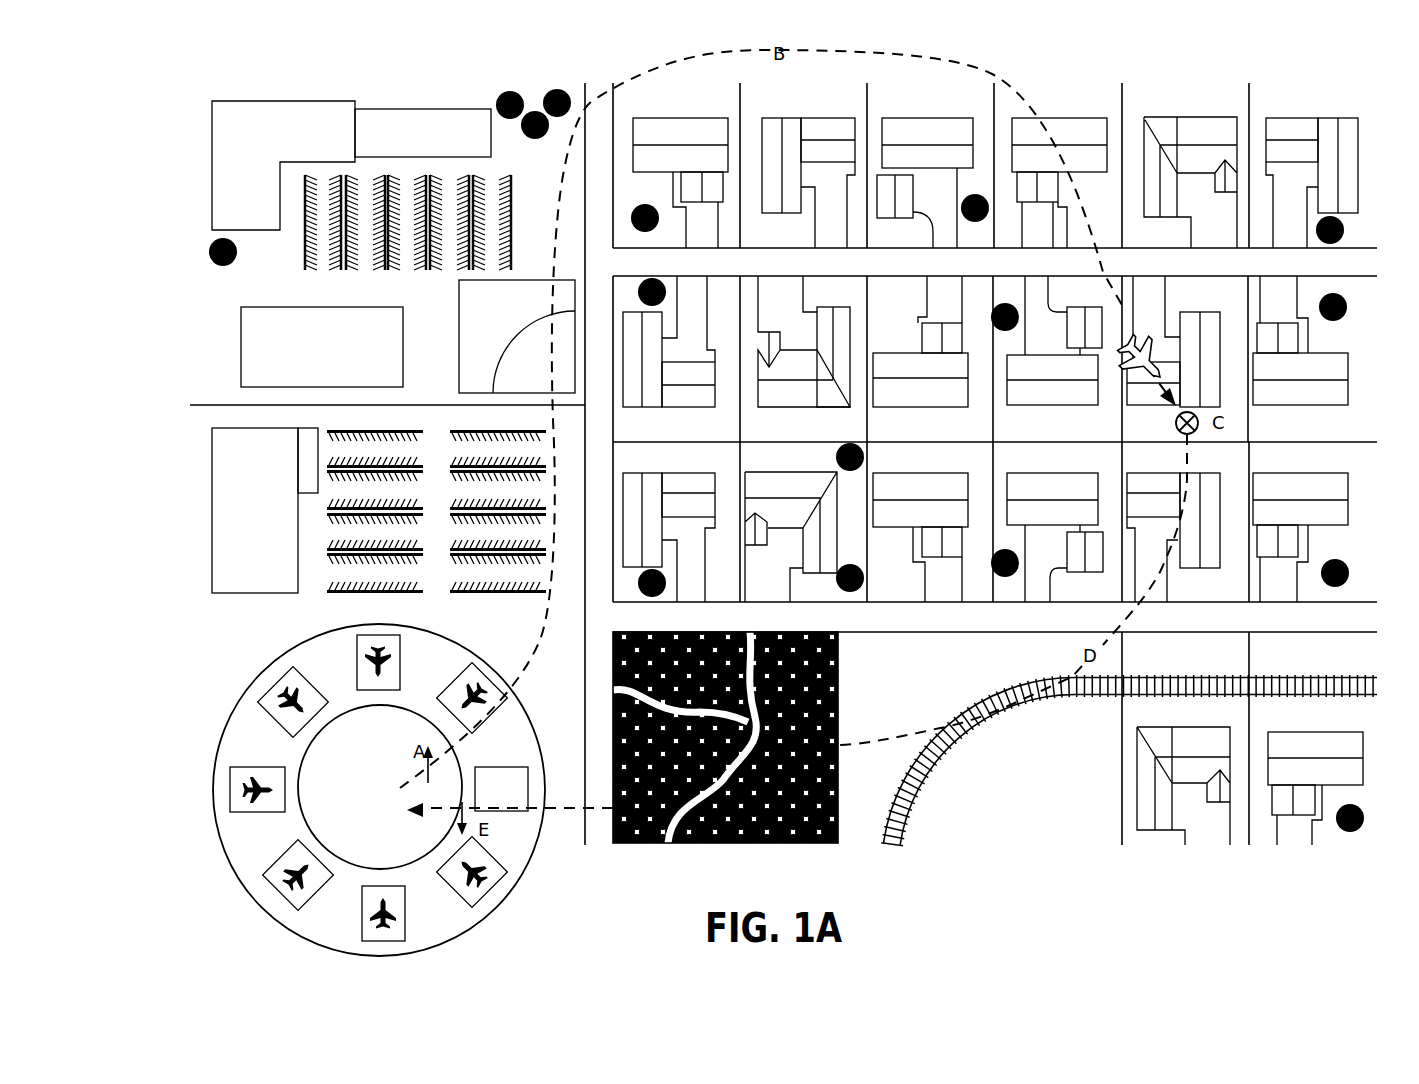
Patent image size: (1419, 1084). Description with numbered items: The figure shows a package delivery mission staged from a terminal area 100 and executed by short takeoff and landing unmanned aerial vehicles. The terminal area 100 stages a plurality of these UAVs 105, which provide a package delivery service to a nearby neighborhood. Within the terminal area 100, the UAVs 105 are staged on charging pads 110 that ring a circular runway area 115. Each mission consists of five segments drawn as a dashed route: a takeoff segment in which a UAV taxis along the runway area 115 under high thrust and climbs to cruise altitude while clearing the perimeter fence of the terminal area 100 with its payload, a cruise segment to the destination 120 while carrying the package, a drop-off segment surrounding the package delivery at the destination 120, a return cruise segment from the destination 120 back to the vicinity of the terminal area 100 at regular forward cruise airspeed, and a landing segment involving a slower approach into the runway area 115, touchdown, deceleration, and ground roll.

The terminal area 100 is at (542, 911).
The UAVs 105 is at (243, 787).
The charging pads 110 is at (260, 698).
The runway area 115 is at (392, 796).
The destination 120 is at (1175, 425).